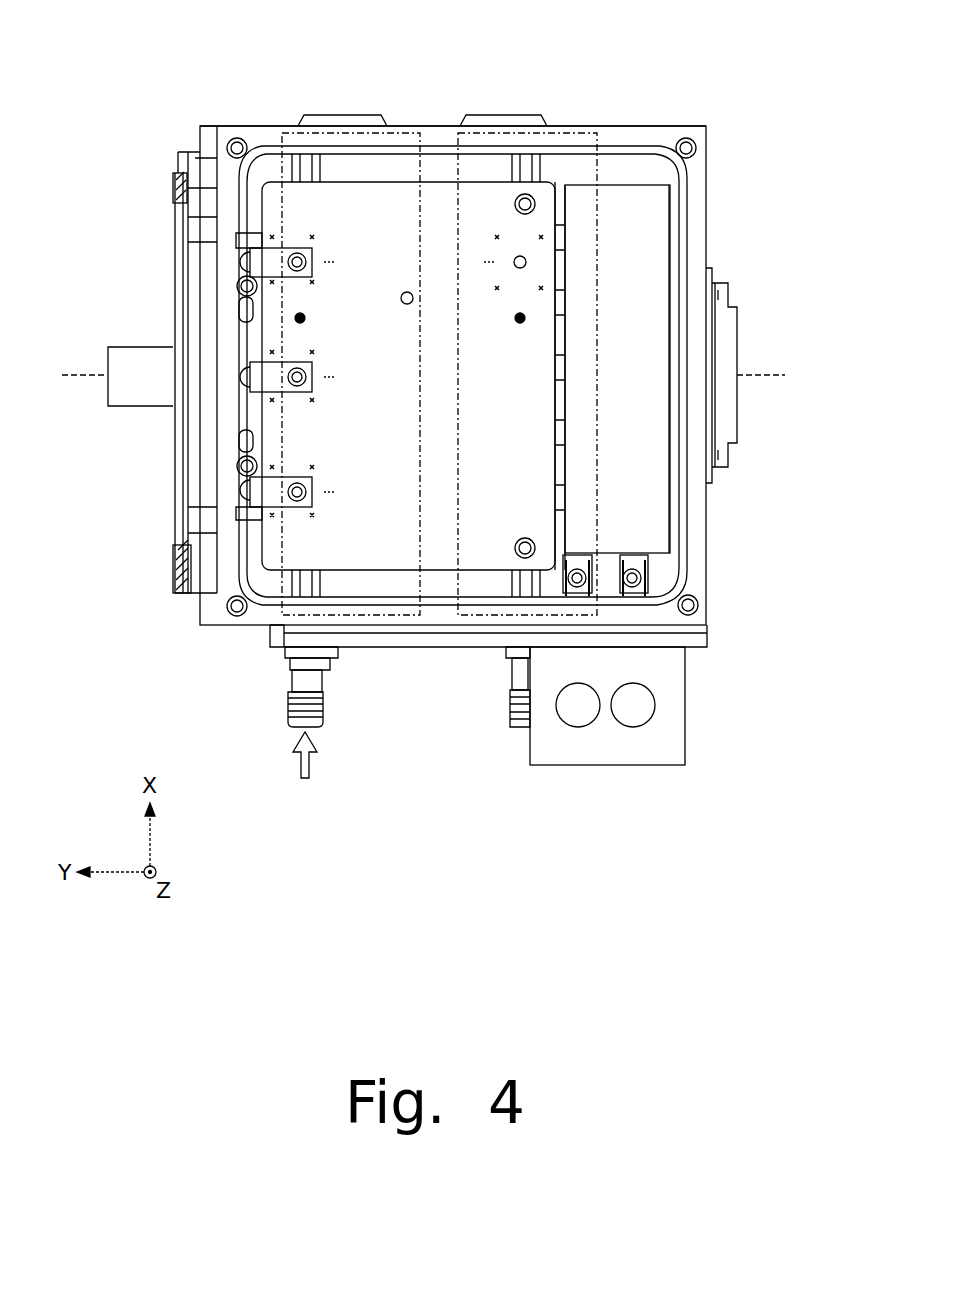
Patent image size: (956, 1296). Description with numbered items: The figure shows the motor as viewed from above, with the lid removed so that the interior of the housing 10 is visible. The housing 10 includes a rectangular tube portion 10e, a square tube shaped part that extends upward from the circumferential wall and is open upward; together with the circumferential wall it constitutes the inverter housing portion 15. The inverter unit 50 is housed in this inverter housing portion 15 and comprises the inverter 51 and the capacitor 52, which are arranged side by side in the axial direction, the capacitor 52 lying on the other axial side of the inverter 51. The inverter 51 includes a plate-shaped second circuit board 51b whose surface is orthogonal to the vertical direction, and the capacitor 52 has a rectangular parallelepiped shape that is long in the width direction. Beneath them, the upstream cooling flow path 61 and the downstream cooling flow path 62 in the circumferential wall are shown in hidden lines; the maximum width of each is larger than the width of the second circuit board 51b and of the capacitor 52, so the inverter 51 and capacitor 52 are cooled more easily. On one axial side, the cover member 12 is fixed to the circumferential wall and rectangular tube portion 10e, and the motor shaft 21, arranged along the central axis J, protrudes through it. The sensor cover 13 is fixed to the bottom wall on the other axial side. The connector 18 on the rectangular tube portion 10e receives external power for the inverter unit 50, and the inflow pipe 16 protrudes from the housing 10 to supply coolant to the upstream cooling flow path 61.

The housing 10 is at (708, 505).
The rectangular tube portion 10e is at (262, 127).
The cover member 12 is at (182, 178).
The sensor cover 13 is at (723, 343).
The inverter housing portion 15 is at (655, 573).
The inflow pipe 16 is at (315, 705).
The connector 18 is at (660, 738).
The motor shaft 21 is at (143, 385).
The inverter unit 50 is at (464, 292).
The inverter 51 is at (550, 183).
The second circuit board 51b is at (440, 212).
The capacitor 52 is at (628, 210).
The upstream cooling flow path 61 is at (358, 143).
The downstream cooling flow path 62 is at (497, 140).
The central axis J is at (84, 375).